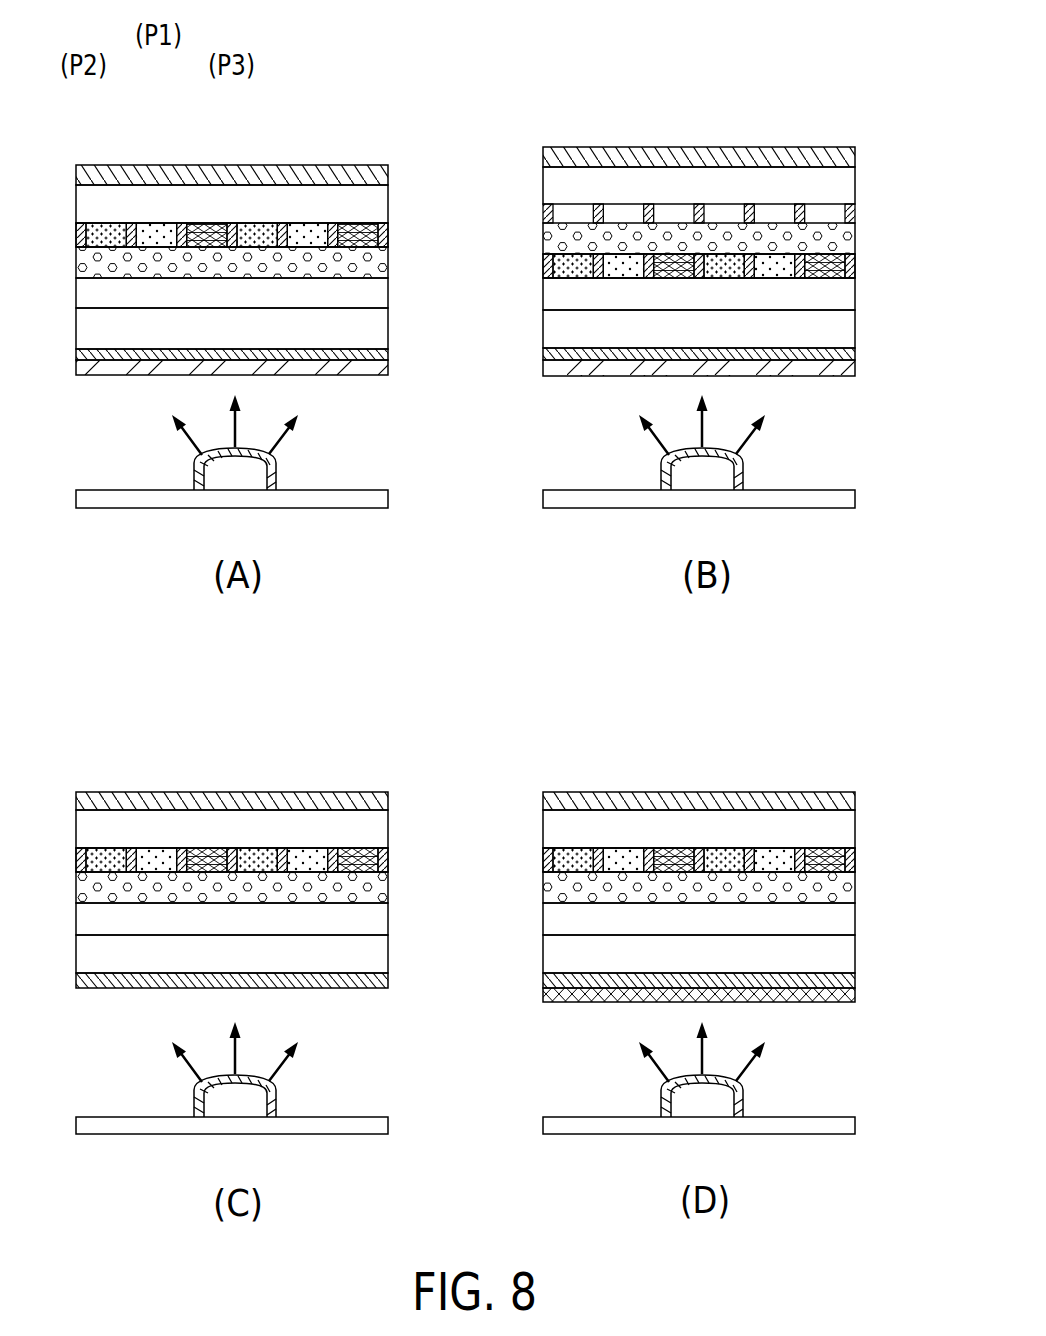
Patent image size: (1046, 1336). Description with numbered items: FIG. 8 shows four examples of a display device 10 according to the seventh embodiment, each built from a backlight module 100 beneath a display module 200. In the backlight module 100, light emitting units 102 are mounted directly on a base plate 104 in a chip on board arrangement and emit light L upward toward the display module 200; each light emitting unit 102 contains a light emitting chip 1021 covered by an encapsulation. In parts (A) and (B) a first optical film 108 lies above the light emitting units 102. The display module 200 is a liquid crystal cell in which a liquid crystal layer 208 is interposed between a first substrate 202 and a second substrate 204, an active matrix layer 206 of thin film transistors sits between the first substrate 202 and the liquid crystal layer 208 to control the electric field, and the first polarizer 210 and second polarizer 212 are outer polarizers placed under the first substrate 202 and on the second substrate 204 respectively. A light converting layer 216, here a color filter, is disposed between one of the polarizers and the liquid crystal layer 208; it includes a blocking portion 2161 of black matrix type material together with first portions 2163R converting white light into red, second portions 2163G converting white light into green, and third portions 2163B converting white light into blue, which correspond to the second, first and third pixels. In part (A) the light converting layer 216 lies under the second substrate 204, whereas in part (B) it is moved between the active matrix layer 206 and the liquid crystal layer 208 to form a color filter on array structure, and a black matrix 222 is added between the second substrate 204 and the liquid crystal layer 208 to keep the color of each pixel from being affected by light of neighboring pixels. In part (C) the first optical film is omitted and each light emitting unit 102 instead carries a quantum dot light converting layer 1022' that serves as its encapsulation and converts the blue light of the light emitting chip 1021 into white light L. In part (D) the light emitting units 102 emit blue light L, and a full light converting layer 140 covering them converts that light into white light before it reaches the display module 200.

The display device 10 is at (390, 62).
The backlight module 100 is at (68, 508).
The light emitting unit 102 is at (284, 469).
The base plate 104 is at (375, 495).
The first optical film 108 is at (370, 368).
The light converting layer 140 is at (840, 995).
The display module 200 is at (68, 360).
The first substrate 202 is at (375, 325).
The second substrate 204 is at (375, 200).
The active matrix layer 206 is at (375, 293).
The liquid crystal layer 208 is at (397, 247).
The first polarizer 210 is at (375, 354).
The second polarizer 212 is at (375, 173).
The light converting layer 216 is at (397, 223).
The black matrix 222 is at (863, 204).
The blocking portion 2161 is at (333, 232).
The first portion 2163R is at (108, 232).
The second portion 2163G is at (158, 232).
The third portion 2163B is at (208, 232).
The light emitting chip 1021 is at (250, 1105).
The light converting layer 1022' is at (277, 1072).
The light L is at (236, 427).